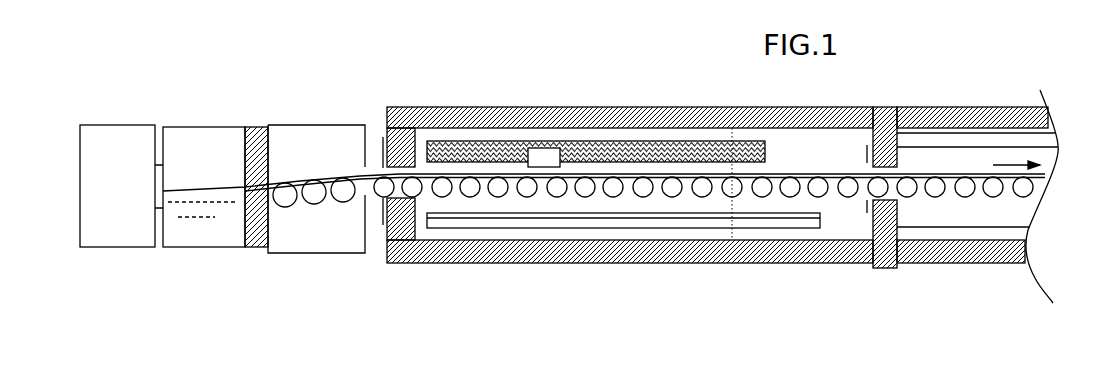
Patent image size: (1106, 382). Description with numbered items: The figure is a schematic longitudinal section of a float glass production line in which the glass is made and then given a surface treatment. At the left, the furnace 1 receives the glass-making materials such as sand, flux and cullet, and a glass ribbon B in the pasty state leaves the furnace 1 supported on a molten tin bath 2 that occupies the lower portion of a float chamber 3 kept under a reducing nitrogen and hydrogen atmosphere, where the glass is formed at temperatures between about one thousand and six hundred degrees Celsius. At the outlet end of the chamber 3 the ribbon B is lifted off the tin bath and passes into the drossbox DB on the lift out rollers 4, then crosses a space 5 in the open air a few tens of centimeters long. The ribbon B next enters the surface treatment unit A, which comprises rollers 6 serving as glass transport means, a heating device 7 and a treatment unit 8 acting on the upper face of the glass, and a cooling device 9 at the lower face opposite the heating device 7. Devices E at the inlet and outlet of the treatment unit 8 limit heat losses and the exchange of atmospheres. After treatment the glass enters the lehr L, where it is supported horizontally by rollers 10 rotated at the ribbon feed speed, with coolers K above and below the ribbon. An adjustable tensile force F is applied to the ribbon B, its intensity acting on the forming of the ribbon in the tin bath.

The furnace 1 is at (125, 148).
The molten tin bath 2 is at (193, 218).
The float chamber 3 is at (220, 150).
The drossbox DB is at (323, 150).
The rollers 4 is at (317, 203).
The space 5 is at (373, 148).
The glass ribbon B is at (225, 192).
The surface treatment unit A is at (616, 180).
The devices E is at (385, 212).
The rollers 6 is at (442, 188).
The heating device 7 is at (682, 160).
The treatment unit 8 is at (543, 168).
The cooling device 9 is at (738, 228).
The rollers 10 is at (997, 193).
The lehr L is at (985, 120).
The coolers K is at (942, 140).
The tensile force F is at (1020, 163).